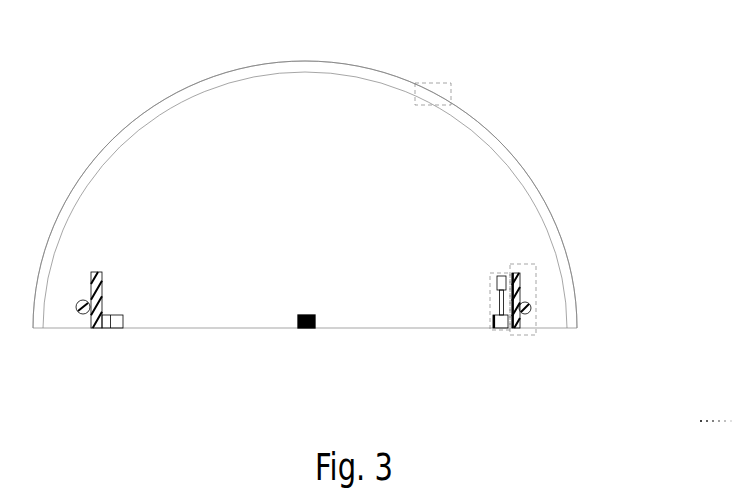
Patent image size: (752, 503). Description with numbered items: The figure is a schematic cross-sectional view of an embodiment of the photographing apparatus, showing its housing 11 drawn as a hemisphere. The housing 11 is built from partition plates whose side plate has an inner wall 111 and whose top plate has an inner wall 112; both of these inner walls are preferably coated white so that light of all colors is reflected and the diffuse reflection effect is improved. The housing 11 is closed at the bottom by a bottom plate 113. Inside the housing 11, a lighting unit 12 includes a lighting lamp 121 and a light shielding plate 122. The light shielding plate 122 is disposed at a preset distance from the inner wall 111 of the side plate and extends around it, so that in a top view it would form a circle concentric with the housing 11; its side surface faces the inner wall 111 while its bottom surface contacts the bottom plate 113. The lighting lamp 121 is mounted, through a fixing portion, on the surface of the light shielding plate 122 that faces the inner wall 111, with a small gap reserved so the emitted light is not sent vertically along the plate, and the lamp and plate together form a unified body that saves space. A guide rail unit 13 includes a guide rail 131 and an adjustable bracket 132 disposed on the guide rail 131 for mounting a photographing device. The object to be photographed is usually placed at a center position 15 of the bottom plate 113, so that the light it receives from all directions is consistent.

The housing 11 is at (428, 95).
The inner wall of the side plate 111 is at (532, 198).
The inner wall of the top plate 112 is at (292, 73).
The bottom plate 113 is at (238, 329).
The lighting unit 12 is at (586, 264).
The lighting lamp 121 is at (530, 305).
The light shielding plate 122 is at (518, 290).
The guide rail unit 13 is at (445, 330).
The guide rail 131 is at (505, 330).
The adjustable bracket 132 is at (499, 297).
The center position 15 is at (307, 328).